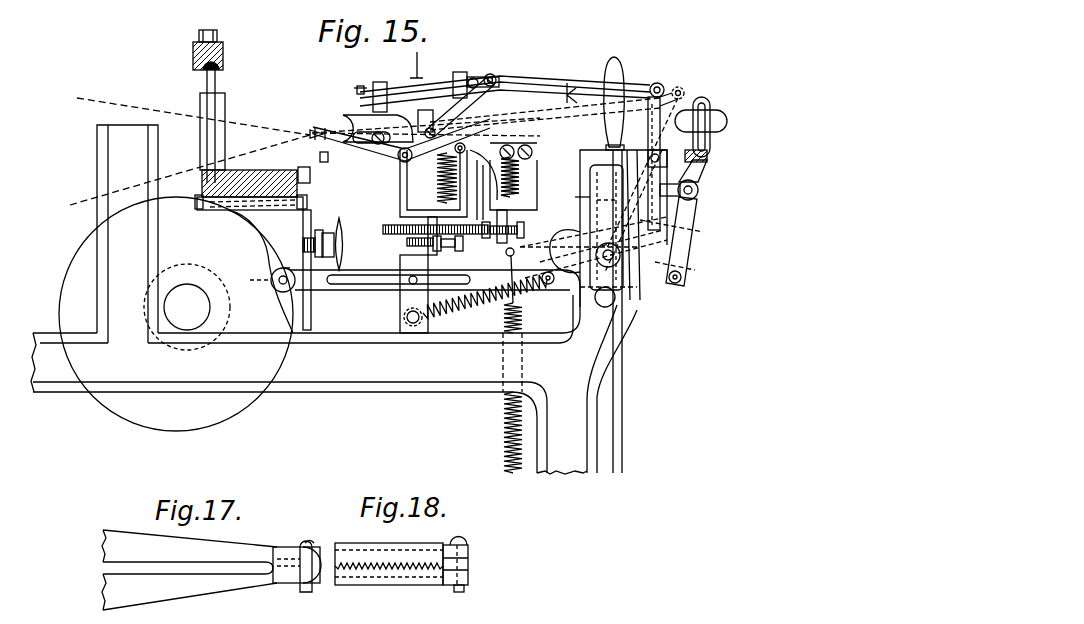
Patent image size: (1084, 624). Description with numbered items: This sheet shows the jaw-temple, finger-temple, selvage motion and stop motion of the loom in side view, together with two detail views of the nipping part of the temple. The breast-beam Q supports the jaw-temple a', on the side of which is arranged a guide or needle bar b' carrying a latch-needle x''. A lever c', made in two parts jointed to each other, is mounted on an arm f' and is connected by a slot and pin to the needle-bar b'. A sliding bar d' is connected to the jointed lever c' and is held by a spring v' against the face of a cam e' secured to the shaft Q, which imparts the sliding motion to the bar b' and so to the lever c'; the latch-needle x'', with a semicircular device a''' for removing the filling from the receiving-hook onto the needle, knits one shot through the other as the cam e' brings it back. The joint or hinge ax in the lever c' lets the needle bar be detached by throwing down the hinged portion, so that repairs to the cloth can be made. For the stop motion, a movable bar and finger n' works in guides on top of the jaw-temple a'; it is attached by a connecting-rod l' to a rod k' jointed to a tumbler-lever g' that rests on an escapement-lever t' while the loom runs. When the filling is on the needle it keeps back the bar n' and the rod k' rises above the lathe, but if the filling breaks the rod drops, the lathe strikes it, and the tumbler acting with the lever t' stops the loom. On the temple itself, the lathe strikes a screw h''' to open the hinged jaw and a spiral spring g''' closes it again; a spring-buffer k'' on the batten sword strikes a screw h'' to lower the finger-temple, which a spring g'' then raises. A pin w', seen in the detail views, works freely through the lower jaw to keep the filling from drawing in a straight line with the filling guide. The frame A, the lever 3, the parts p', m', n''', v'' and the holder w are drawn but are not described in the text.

In FIG. 15, the frame A is at (334, 299).
In FIG. 15, the hand lever 3 is at (618, 252).
In FIG. 15, the breast-beam Q is at (187, 307).
In FIG. 15, the cam e' is at (176, 314).
In FIG. 15, the sliding bar d' is at (451, 275).
In FIG. 15, the latch-needle x'' is at (258, 180).
In FIG. 15, the semicircular device a''' is at (310, 155).
In FIG. 15, the jaw-temple a' is at (378, 127).
In FIG. 15, the lever p' is at (401, 149).
In FIG. 15, the guide or needle bar b' is at (531, 144).
In FIG. 15, the connecting link m' is at (505, 105).
In FIG. 15, the movable bar and finger n' is at (357, 81).
In FIG. 15, the connecting-rod l' is at (417, 63).
In FIG. 15, the rod k' is at (572, 90).
In FIG. 15, the spring g'' is at (438, 183).
In FIG. 15, the spiral spring g''' is at (518, 193).
In FIG. 15, the screw h''' is at (453, 202).
In FIG. 15, the screw h'' is at (442, 247).
In FIG. 15, the spring-buffer k'' is at (342, 244).
In FIG. 15, the nut n''' is at (332, 251).
In FIG. 15, the spring v' is at (485, 303).
In FIG. 15, the spring v'' is at (502, 360).
In FIG. 15, the holder w is at (608, 228).
In FIG. 15, the lever c' is at (662, 177).
In FIG. 15, the joint or hinge ax is at (702, 166).
In FIG. 15, the arm f' is at (680, 177).
In FIG. 15, the tumbler-lever g' is at (680, 241).
In FIG. 15, the escapement-lever t' is at (681, 271).
In FIG. 17, the pin w' is at (310, 558).
In FIG. 18, the pin w' is at (469, 565).